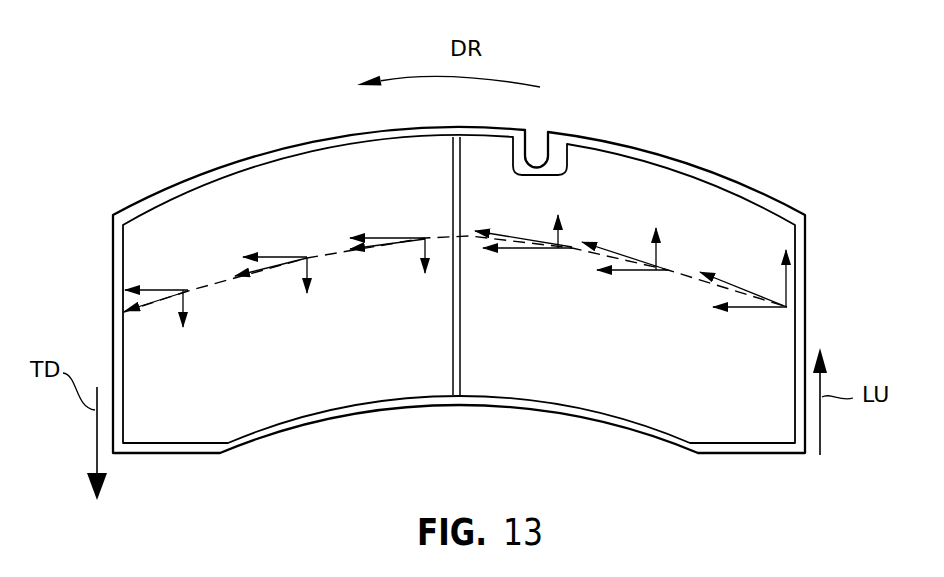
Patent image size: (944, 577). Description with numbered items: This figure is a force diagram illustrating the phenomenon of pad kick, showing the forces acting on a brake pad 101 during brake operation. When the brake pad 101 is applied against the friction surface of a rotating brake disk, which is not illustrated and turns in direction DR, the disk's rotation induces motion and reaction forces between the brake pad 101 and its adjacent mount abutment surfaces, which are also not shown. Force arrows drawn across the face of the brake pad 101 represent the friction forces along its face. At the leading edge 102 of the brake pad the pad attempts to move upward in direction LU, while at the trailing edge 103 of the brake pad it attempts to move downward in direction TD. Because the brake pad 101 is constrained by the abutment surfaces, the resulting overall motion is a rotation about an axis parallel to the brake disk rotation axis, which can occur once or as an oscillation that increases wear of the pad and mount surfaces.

The brake pad 101 is at (142, 197).
The leading edge 102 is at (812, 458).
The trailing edge 103 is at (88, 440).